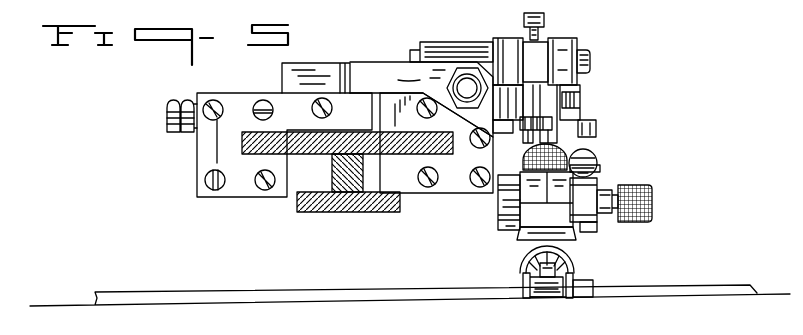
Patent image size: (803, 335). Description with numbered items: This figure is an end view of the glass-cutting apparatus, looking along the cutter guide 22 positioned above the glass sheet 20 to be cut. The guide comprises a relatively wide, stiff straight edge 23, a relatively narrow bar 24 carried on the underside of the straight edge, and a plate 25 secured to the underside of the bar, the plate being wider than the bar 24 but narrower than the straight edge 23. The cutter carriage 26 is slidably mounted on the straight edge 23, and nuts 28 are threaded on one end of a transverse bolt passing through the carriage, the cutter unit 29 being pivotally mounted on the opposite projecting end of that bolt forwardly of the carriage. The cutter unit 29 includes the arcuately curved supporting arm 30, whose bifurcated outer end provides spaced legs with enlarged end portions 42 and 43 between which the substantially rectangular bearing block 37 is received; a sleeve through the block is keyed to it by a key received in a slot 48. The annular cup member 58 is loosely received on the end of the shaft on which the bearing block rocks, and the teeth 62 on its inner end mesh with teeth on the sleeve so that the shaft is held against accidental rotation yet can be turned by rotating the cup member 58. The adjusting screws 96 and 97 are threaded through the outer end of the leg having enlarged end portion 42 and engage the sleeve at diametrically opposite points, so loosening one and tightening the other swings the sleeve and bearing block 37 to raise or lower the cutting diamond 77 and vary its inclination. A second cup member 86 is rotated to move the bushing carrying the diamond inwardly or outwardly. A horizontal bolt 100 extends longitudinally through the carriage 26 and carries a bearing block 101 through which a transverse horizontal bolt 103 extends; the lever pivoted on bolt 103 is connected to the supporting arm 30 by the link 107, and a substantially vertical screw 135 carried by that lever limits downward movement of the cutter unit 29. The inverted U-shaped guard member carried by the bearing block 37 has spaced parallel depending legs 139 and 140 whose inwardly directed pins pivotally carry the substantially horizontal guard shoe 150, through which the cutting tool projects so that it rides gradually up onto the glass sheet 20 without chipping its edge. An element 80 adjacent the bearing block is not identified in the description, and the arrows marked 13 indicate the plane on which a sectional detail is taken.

The stop pin 13 is at (590, 142).
The glass sheet 20 is at (240, 291).
The cutter guide 22 is at (332, 171).
The straight edge 23 is at (242, 145).
The bar 24 is at (368, 167).
The plate 25 is at (330, 204).
The cutter carriage 26 is at (283, 101).
The nuts 28 is at (188, 100).
The cutter unit 29 is at (598, 114).
The supporting arm 30 is at (567, 148).
The bearing block 37 is at (515, 210).
The enlarged end portion 42 is at (602, 180).
The enlarged end portion 43 is at (508, 202).
The slot 48 is at (546, 199).
The cup member 58 is at (648, 186).
The teeth 62 is at (615, 214).
The cutting diamond 77 is at (545, 298).
The flange 80 is at (520, 254).
The cup member 86 is at (527, 157).
The adjusting screw 96 is at (596, 162).
The adjusting screw 97 is at (600, 236).
The horizontal bolt 100 is at (420, 79).
The bearing block 101 is at (485, 42).
The horizontal bolt 103 is at (583, 56).
The link 107 is at (562, 96).
The screw 135 is at (544, 22).
The depending leg 139 is at (584, 297).
The depending leg 140 is at (523, 272).
The guard shoe 150 is at (538, 298).